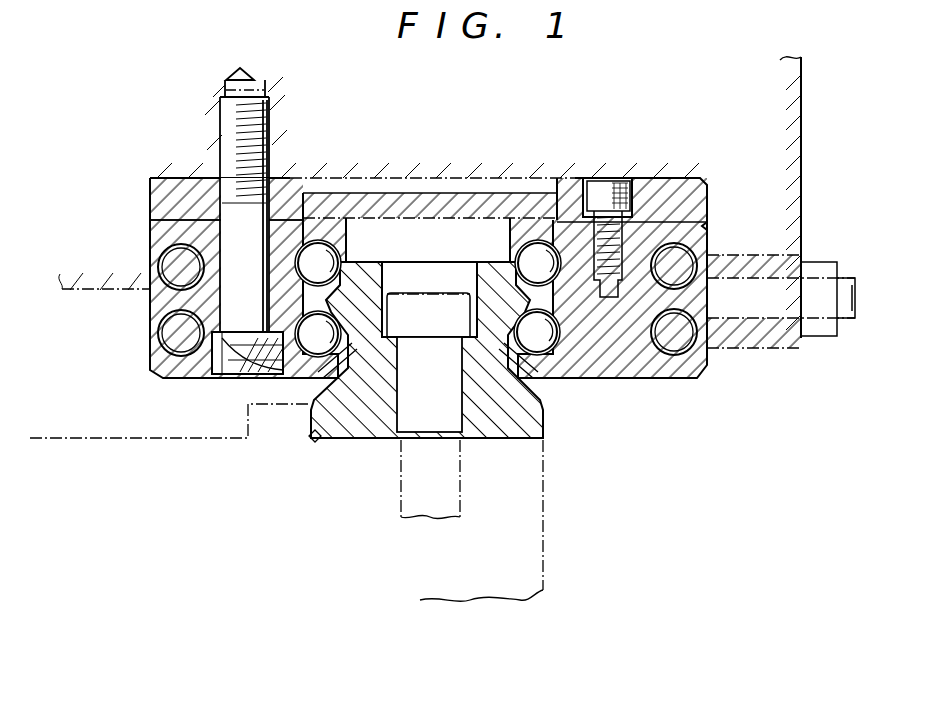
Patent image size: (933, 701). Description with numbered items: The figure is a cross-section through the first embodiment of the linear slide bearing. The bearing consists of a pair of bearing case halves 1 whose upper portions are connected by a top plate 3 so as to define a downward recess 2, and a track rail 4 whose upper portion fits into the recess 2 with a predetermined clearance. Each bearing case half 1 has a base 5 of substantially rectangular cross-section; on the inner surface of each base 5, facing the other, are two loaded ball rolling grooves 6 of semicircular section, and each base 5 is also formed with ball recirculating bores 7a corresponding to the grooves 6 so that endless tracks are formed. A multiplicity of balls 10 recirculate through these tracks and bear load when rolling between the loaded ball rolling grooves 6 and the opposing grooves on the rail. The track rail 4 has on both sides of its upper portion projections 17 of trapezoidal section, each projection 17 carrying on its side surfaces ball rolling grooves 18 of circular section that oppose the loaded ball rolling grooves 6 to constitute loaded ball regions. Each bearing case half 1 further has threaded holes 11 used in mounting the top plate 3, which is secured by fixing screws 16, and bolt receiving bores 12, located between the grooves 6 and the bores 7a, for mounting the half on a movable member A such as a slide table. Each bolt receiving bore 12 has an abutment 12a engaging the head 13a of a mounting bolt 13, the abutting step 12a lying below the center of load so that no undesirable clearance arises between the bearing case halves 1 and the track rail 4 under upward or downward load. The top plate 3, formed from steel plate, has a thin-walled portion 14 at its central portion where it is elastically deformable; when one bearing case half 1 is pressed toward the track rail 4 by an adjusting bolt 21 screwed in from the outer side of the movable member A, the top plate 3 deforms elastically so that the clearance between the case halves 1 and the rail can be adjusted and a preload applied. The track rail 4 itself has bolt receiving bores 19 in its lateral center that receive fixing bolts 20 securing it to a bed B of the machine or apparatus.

The bearing case half 1 is at (176, 381).
The downward recess 2 is at (468, 240).
The top plate 3 is at (353, 190).
The track rail 4 is at (318, 442).
The base 5 is at (160, 292).
The loaded ball rolling groove 6 is at (310, 240).
The ball recirculating bore 7a is at (166, 268).
The ball 10 is at (320, 242).
The threaded hole 11 is at (609, 300).
The bolt receiving bore 12 is at (167, 308).
The abutment 12a is at (232, 378).
The mounting bolt 13 is at (270, 150).
The head 13a is at (248, 378).
The thin-walled portion 14 is at (435, 195).
The fixing screw 16 is at (647, 205).
The projection 17 is at (280, 378).
The ball rolling groove 18 is at (384, 232).
The bolt receiving bore 19 is at (456, 440).
The fixing bolt 20 is at (466, 503).
The adjusting bolt 21 is at (855, 313).
The movable member A is at (802, 112).
The bed B is at (548, 590).